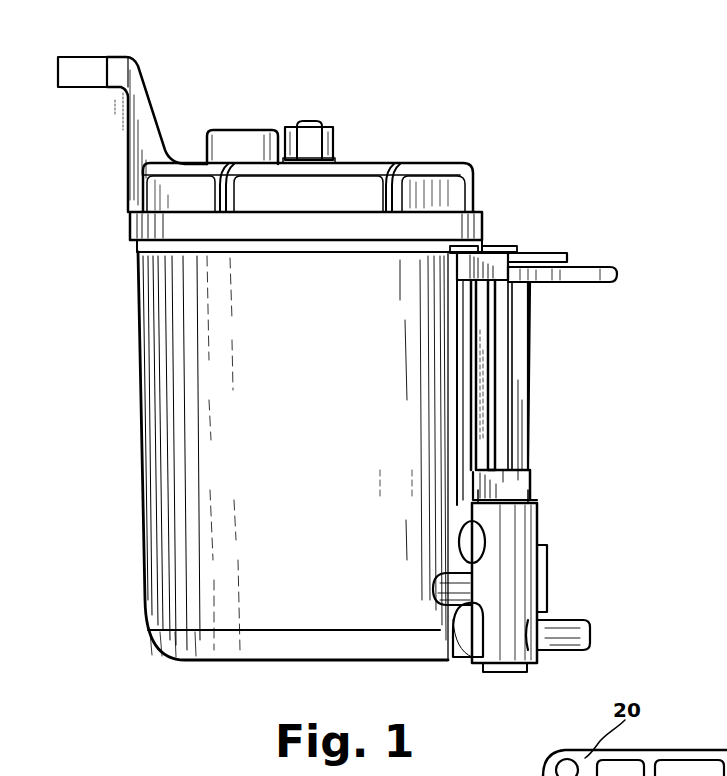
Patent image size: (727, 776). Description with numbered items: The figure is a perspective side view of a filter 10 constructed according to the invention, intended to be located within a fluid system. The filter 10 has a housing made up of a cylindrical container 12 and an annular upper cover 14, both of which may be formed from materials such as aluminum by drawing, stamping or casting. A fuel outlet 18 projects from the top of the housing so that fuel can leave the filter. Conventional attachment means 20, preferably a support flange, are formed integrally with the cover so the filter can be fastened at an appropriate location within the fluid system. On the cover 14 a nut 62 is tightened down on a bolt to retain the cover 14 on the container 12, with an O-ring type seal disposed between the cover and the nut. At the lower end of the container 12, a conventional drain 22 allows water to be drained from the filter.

The filter 10 is at (446, 122).
The cylindrical container 12 is at (165, 453).
The annular upper cover 14 is at (474, 197).
The fuel outlet 18 is at (234, 130).
The attachment means 20 is at (86, 56).
The drain 22 is at (556, 650).
The nut 62 is at (324, 142).